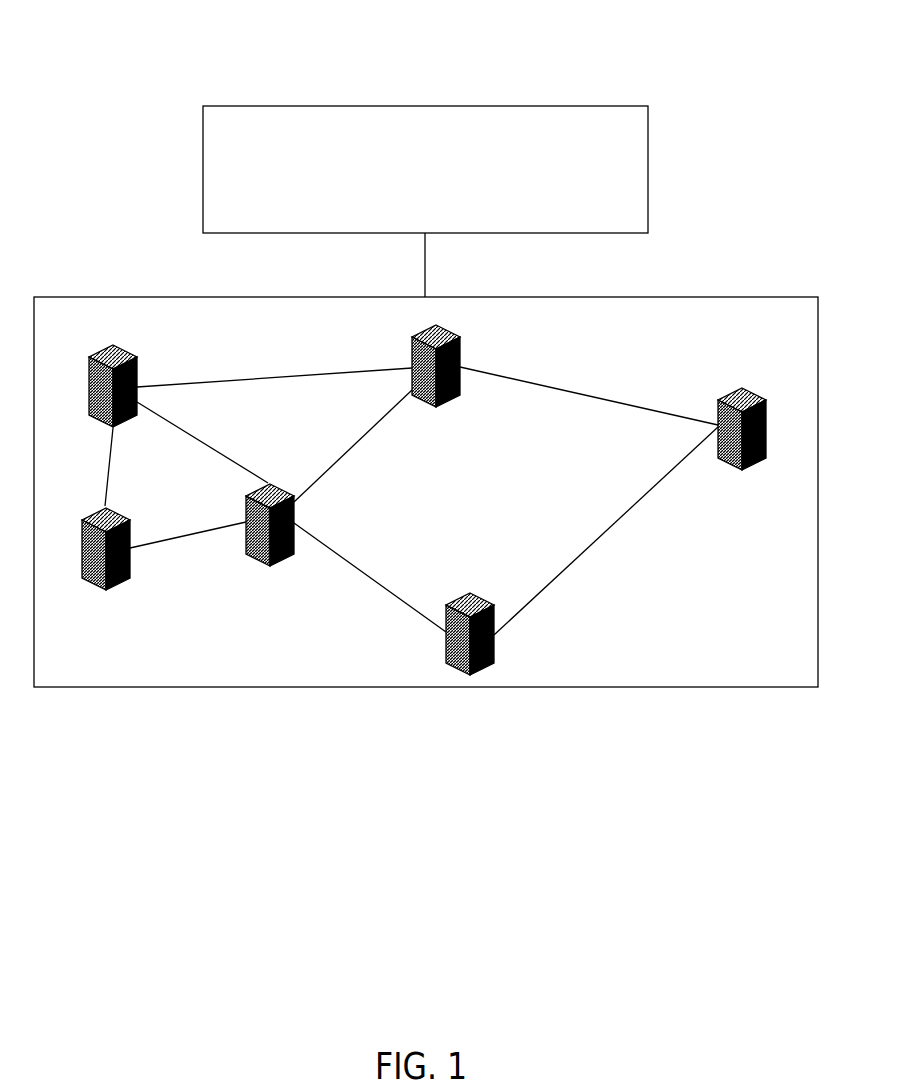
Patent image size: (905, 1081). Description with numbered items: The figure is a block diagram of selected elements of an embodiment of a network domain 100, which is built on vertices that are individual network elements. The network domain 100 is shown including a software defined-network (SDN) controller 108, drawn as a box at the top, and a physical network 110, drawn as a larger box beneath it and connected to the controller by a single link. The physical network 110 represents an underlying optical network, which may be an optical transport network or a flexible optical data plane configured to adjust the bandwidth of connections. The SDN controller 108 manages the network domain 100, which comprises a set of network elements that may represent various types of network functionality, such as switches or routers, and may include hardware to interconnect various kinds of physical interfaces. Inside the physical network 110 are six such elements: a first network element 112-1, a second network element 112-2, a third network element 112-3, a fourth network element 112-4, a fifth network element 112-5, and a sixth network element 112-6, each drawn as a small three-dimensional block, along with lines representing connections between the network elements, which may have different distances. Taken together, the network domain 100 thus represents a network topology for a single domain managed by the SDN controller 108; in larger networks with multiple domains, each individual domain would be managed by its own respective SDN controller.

The network domain 100 is at (110, 34).
The software defined-network (SDN) controller 108 is at (438, 206).
The physical network 110 is at (253, 676).
The network element NE_A 112-1 is at (115, 513).
The network element NE_B 112-2 is at (246, 541).
The network element NE_C 112-3 is at (470, 593).
The network element NE_D 112-4 is at (735, 390).
The network element NE_E 112-5 is at (427, 333).
The network element NE_F 112-6 is at (111, 346).